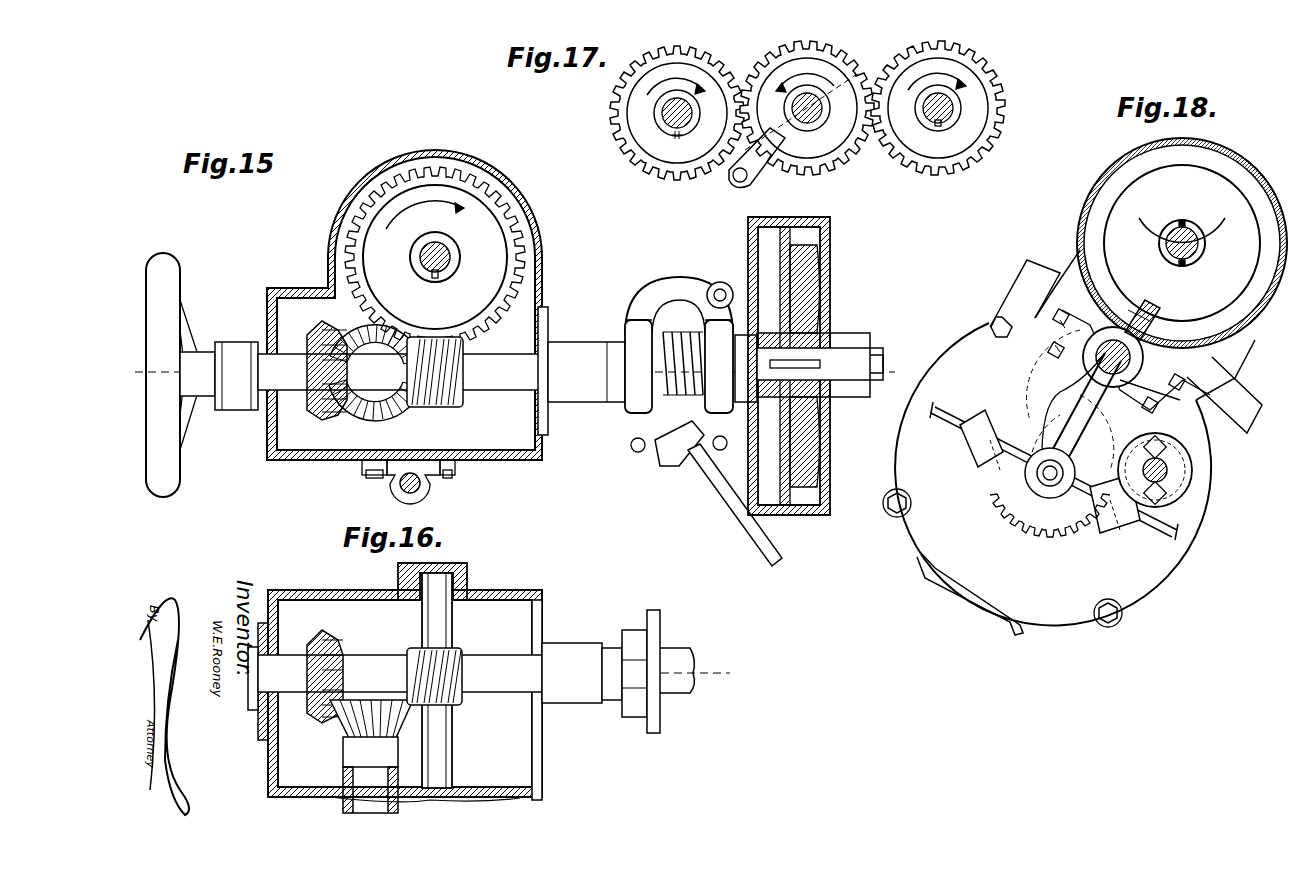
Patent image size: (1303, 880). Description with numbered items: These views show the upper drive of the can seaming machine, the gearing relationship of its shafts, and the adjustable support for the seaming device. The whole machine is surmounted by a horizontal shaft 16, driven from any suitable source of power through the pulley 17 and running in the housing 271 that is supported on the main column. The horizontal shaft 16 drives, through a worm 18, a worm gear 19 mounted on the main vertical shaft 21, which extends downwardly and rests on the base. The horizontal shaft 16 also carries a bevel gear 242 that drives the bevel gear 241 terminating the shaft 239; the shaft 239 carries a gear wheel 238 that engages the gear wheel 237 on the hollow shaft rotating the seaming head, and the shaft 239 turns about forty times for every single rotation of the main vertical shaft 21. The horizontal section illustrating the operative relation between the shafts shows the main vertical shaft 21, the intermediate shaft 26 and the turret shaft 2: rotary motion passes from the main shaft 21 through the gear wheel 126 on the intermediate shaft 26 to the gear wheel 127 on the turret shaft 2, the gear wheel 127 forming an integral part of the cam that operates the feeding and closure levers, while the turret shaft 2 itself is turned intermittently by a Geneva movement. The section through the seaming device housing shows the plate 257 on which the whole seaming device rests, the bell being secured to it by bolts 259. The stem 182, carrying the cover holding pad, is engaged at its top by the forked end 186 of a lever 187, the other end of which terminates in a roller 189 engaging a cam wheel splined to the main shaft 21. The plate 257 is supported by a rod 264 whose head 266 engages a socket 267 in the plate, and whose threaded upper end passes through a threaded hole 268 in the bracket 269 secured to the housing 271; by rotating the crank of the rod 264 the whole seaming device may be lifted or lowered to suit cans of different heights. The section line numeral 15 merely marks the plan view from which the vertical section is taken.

In FIG. 17, the turret shaft 2 is at (672, 125).
In FIG. 16, the shaft 15 is at (693, 673).
In FIG. 15, the horizontal shaft 16 is at (180, 377).
In FIG. 16, the horizontal shaft 16 is at (683, 615).
In FIG. 15, the pulley 17 is at (820, 247).
In FIG. 15, the worm 18 is at (445, 404).
In FIG. 16, the worm 18 is at (455, 648).
In FIG. 15, the worm gear 19 is at (470, 200).
In FIG. 15, the main vertical shaft 21 is at (440, 250).
In FIG. 17, the main vertical shaft 21 is at (945, 104).
In FIG. 18, the main vertical shaft 21 is at (1192, 238).
In FIG. 16, the main vertical shaft 21 is at (440, 760).
In FIG. 17, the intermediate shaft 26 is at (807, 108).
In FIG. 17, the gear wheel 126 is at (838, 145).
In FIG. 17, the gear wheel 127 is at (640, 145).
In FIG. 18, the stem 182 is at (1048, 478).
In FIG. 18, the forked end 186 is at (1075, 475).
In FIG. 18, the lever 187 is at (1090, 405).
In FIG. 18, the roller 189 is at (1145, 315).
In FIG. 18, the gear wheel 237 is at (1055, 388).
In FIG. 18, the gear wheel 238 is at (990, 500).
In FIG. 15, the shaft 239 is at (357, 378).
In FIG. 18, the shaft 239 is at (1122, 350).
In FIG. 16, the shaft 239 is at (362, 775).
In FIG. 15, the bevel gear 241 is at (395, 410).
In FIG. 16, the bevel gear 241 is at (345, 740).
In FIG. 15, the bevel gear 242 is at (318, 418).
In FIG. 16, the bevel gear 242 is at (335, 640).
In FIG. 18, the plate 257 is at (1160, 580).
In FIG. 18, the bolts 259 is at (895, 513).
In FIG. 15, the rod 264 is at (400, 490).
In FIG. 18, the head 266 is at (1185, 485).
In FIG. 18, the socket 267 is at (1180, 472).
In FIG. 15, the threaded hole 268 is at (420, 486).
In FIG. 15, the bracket 269 is at (455, 464).
In FIG. 15, the housing 271 is at (520, 462).
In FIG. 18, the housing 271 is at (1255, 170).
In FIG. 16, the housing 271 is at (542, 600).